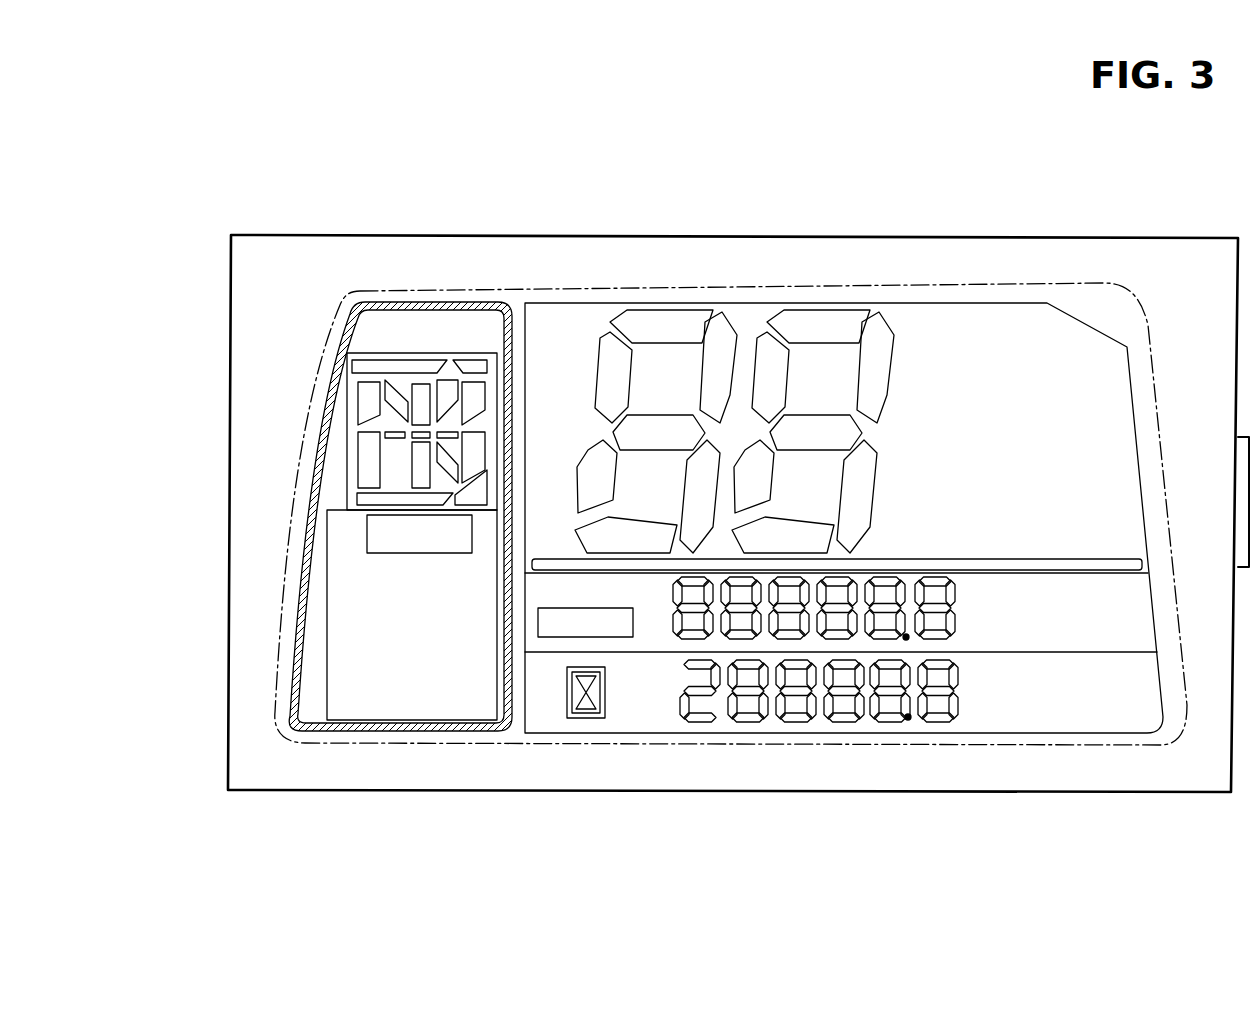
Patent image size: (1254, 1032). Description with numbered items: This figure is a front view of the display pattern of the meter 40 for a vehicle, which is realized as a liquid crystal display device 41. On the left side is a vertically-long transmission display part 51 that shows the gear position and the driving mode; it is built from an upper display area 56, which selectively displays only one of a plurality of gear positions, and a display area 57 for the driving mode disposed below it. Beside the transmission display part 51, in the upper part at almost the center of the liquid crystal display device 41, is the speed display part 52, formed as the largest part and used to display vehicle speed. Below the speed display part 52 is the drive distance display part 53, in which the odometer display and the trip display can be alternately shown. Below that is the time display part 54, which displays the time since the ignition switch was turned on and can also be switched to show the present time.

The meter for a vehicle 40 is at (255, 132).
The liquid crystal display device 41 is at (467, 224).
The transmission display part 51 is at (87, 363).
The speed display part 52 is at (762, 303).
The drive distance display part 53 is at (1083, 635).
The time display part 54 is at (1022, 737).
The display area for selectively displaying only one of a plurality of gear position 56 is at (343, 420).
The display area for displaying a driving mode 57 is at (327, 608).